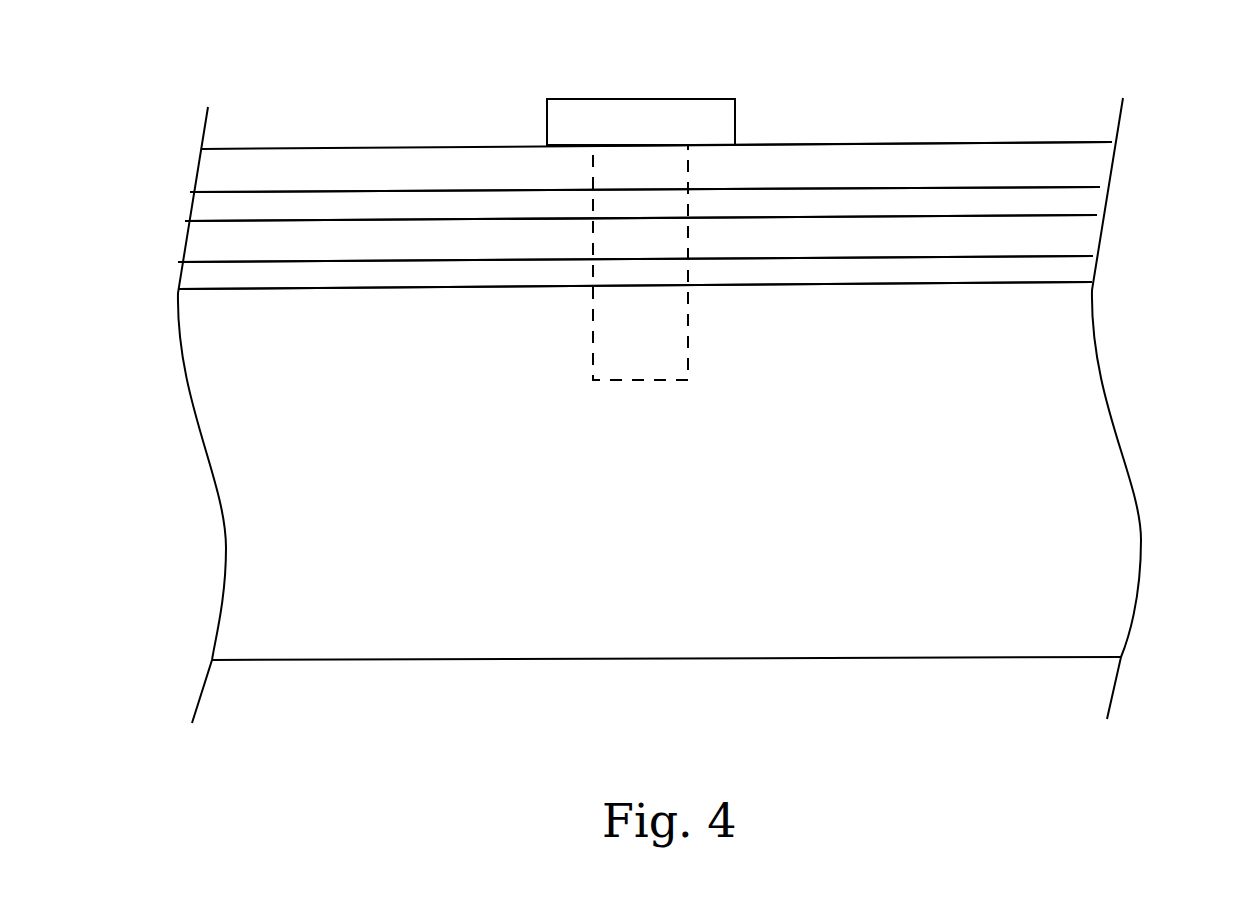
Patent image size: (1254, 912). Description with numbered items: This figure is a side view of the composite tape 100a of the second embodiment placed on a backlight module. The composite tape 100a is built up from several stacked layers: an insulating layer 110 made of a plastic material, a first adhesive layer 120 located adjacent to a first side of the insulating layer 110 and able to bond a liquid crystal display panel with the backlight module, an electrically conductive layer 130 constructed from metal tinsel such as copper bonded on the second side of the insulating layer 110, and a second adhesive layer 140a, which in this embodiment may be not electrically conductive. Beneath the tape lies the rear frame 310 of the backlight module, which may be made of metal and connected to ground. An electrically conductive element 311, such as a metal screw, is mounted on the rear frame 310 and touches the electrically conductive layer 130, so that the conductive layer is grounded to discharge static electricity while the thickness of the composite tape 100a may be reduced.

The rear frame 310 is at (662, 545).
The electrically conductive element 311 is at (591, 108).
The electrically conductive layer 130 is at (1003, 163).
The second adhesive layer 140a is at (1073, 200).
The insulating layer 110 is at (1080, 235).
The first adhesive layer 120 is at (1077, 270).
The composite tape 100a is at (870, 128).